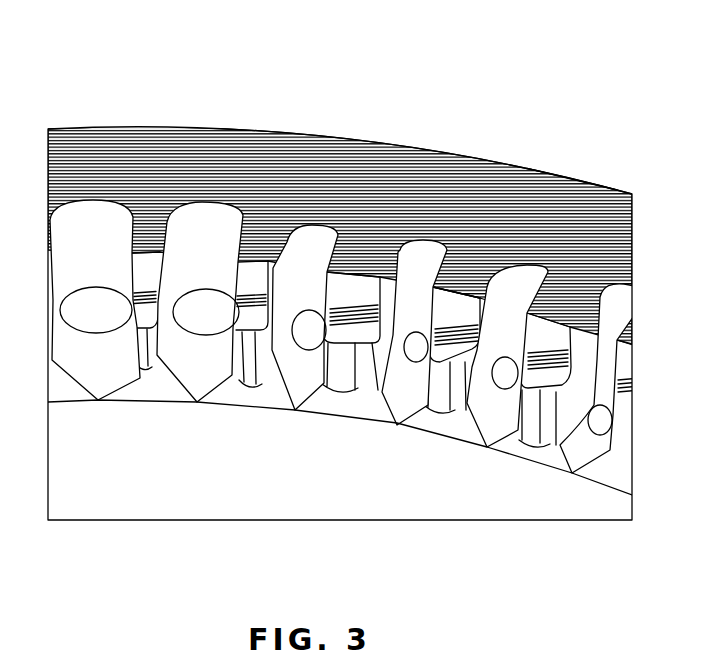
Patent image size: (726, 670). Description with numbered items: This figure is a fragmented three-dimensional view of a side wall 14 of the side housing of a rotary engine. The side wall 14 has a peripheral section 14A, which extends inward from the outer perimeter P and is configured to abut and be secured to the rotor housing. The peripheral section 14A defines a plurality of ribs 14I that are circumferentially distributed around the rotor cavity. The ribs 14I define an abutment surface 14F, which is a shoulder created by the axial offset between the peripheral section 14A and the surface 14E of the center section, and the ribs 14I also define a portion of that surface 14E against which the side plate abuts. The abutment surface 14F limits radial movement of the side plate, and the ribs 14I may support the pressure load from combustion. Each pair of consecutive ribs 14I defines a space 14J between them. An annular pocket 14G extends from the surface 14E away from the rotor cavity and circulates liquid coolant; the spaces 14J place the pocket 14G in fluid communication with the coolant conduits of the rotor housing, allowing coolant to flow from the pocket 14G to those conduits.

The side wall 14 is at (498, 158).
The peripheral section 14A is at (322, 185).
The surface of the center section 14E is at (350, 335).
The abutment surface 14F is at (358, 292).
The pocket 14G is at (441, 487).
The ribs 14I is at (148, 238).
The spaces 14J is at (542, 272).
The outer perimeter P is at (565, 177).